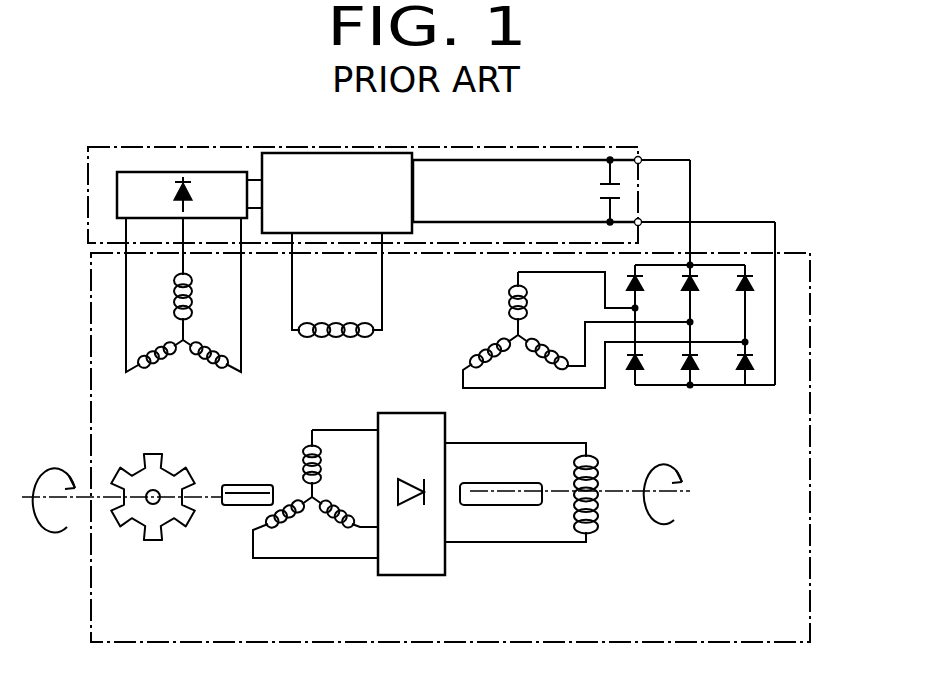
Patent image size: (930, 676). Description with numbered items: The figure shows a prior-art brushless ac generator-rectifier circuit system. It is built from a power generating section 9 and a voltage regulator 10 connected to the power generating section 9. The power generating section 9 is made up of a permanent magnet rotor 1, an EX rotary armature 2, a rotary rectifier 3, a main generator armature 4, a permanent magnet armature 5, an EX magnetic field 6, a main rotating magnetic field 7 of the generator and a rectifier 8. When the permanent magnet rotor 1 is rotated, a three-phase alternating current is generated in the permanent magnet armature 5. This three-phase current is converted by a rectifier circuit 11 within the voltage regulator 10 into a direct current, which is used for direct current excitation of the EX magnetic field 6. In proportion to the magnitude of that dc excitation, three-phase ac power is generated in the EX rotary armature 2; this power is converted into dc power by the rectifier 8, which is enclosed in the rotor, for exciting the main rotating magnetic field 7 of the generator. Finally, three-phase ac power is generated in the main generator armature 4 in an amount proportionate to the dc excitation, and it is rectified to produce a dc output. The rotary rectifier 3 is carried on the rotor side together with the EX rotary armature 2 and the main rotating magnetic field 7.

The permanent magnet rotor 1 is at (134, 528).
The EX rotary armature 2 is at (304, 527).
The rotary rectifier 3 is at (455, 525).
The main generator armature 4 is at (595, 535).
The permanent magnet armature 5 is at (165, 333).
The EX magnetic field 6 is at (378, 336).
The main rotating magnetic field 7 is at (520, 366).
The rectifier 8 is at (730, 306).
The power generating section 9 is at (810, 478).
The voltage regulator 10 is at (612, 146).
The rectifier circuit 11 is at (118, 184).